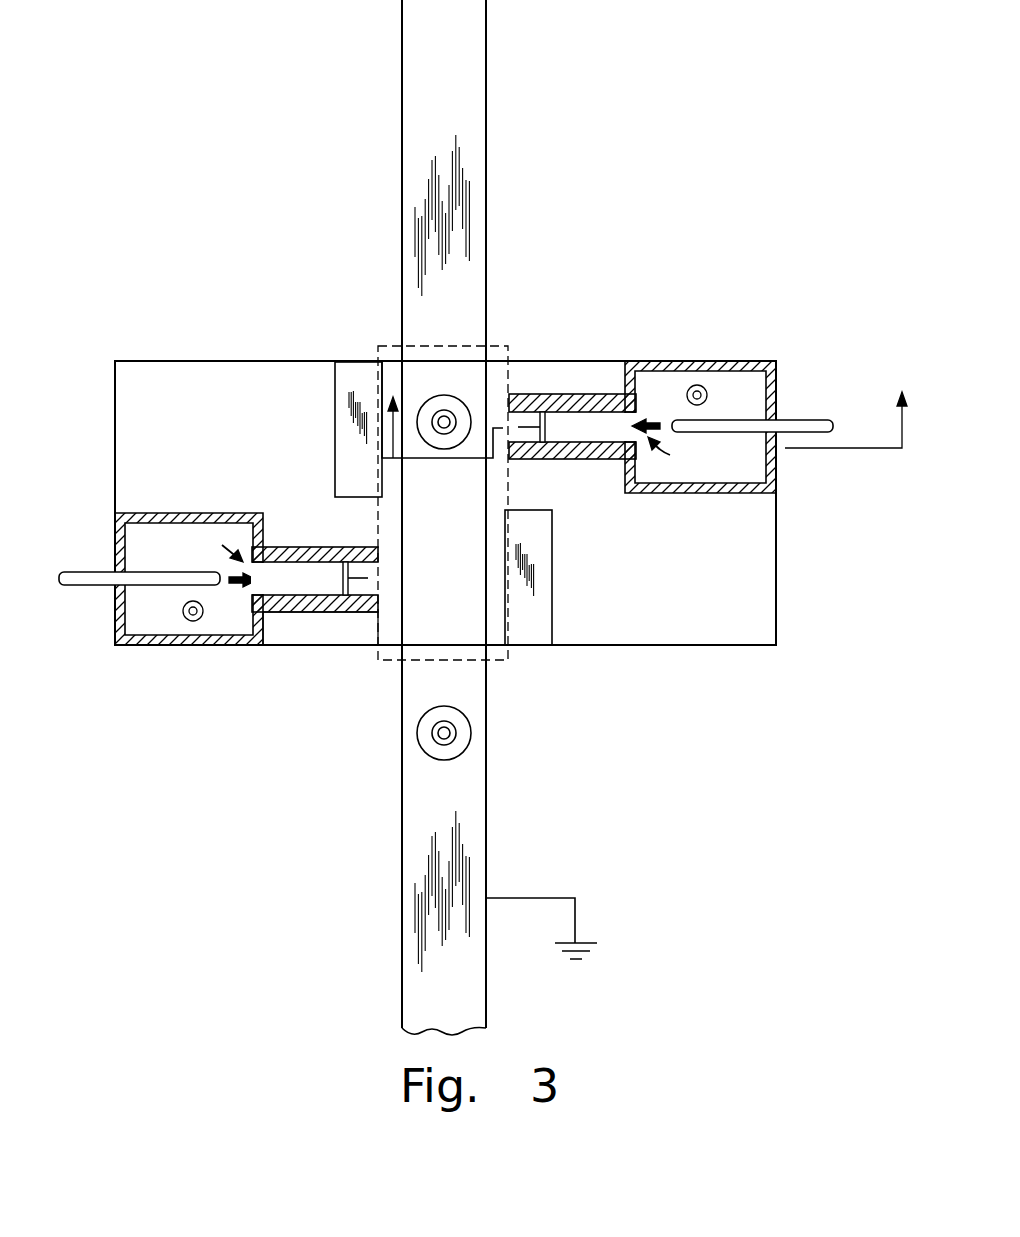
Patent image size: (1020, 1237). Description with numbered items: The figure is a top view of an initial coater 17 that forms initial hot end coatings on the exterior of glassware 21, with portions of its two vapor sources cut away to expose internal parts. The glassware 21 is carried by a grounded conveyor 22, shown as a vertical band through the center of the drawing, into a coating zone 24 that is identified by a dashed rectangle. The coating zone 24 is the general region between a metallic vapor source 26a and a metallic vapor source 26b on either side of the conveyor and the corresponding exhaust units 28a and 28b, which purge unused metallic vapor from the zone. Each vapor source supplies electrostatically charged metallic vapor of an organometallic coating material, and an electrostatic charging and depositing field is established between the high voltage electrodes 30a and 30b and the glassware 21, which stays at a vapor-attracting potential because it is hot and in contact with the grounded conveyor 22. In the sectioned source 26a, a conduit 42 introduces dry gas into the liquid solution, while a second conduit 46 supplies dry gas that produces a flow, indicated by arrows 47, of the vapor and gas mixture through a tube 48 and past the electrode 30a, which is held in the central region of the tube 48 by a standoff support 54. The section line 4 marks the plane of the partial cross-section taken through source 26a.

The initial coater 17 is at (195, 320).
The grounded conveyor 22 is at (486, 127).
The glassware 21 is at (467, 402).
The coating zone 24 is at (425, 670).
The exhaust unit 28a is at (350, 361).
The exhaust unit 28b is at (535, 645).
The metallic vapor source 26a is at (727, 361).
The metallic vapor source 26b is at (170, 645).
The high voltage electrode 30a is at (527, 425).
The high voltage electrode 30b is at (347, 595).
The conduit 42 is at (707, 398).
The second conduit 46 is at (817, 418).
The flow arrows 47 is at (667, 448).
The tube 48 is at (582, 460).
The standoff support 54 is at (545, 427).
The section line 4— 4 is at (647, 441).